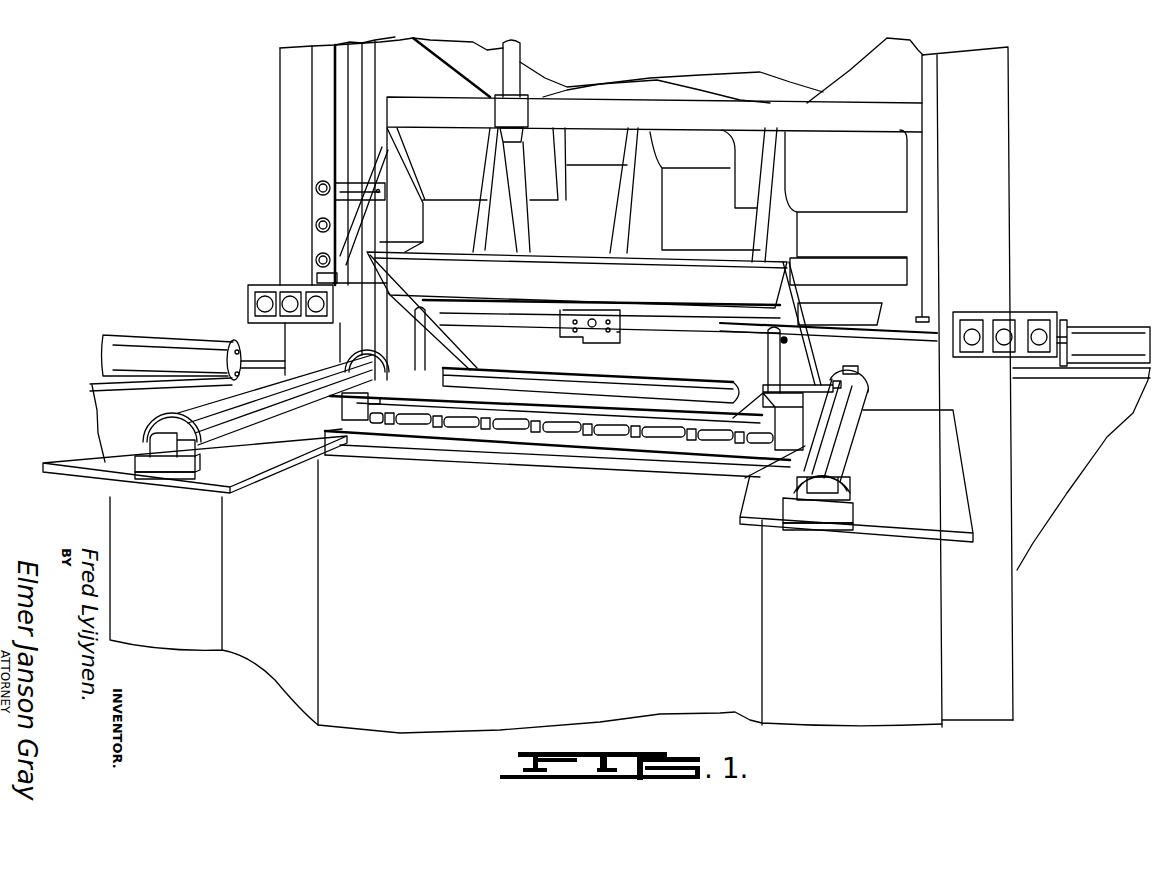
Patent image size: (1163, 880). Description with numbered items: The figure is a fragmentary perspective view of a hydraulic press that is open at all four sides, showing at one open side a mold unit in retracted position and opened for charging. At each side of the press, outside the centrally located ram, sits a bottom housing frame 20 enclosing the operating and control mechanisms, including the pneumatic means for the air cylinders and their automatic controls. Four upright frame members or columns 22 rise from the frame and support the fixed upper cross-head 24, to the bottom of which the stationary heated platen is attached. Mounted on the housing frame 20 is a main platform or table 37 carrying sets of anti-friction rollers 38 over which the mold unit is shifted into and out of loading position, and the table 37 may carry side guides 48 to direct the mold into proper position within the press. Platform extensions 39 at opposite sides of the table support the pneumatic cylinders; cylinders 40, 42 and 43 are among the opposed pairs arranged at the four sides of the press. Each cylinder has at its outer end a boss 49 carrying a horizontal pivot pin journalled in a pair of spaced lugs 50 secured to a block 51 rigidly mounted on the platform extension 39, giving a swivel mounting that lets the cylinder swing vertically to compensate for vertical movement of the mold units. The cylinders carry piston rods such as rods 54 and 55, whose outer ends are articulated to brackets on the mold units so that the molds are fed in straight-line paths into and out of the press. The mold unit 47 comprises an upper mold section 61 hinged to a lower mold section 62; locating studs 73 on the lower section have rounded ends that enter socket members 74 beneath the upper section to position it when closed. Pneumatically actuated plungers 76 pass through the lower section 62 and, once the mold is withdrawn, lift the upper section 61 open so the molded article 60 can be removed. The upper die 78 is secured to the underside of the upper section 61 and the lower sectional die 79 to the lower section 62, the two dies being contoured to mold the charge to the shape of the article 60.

The bottom housing frame 20 is at (590, 595).
The upright frame members 22 is at (290, 155).
The upper cross-head 24 is at (887, 267).
The main platform 37 is at (663, 445).
The anti-friction rollers 38 is at (512, 425).
The platform extensions 39 is at (290, 448).
The pneumatic cylinder 40 is at (240, 417).
The pneumatic cylinder 42 is at (1123, 348).
The pneumatic cylinder 43 is at (133, 357).
The mold unit 47 is at (190, 333).
The side guides 48 is at (373, 393).
The boss 49 is at (167, 450).
The spaced lugs 50 is at (143, 440).
The block 51 is at (185, 470).
The piston rod 54 is at (927, 335).
The piston rod 55 is at (267, 365).
The molded article 60 is at (670, 380).
The upper mold section 61 is at (607, 303).
The lower mold section 62 is at (618, 410).
The locating studs 73 is at (782, 388).
The socket members 74 is at (787, 337).
The pneumatically actuated plunger 76 is at (430, 336).
The upper die 78 is at (673, 323).
The lower sectional die 79 is at (600, 390).